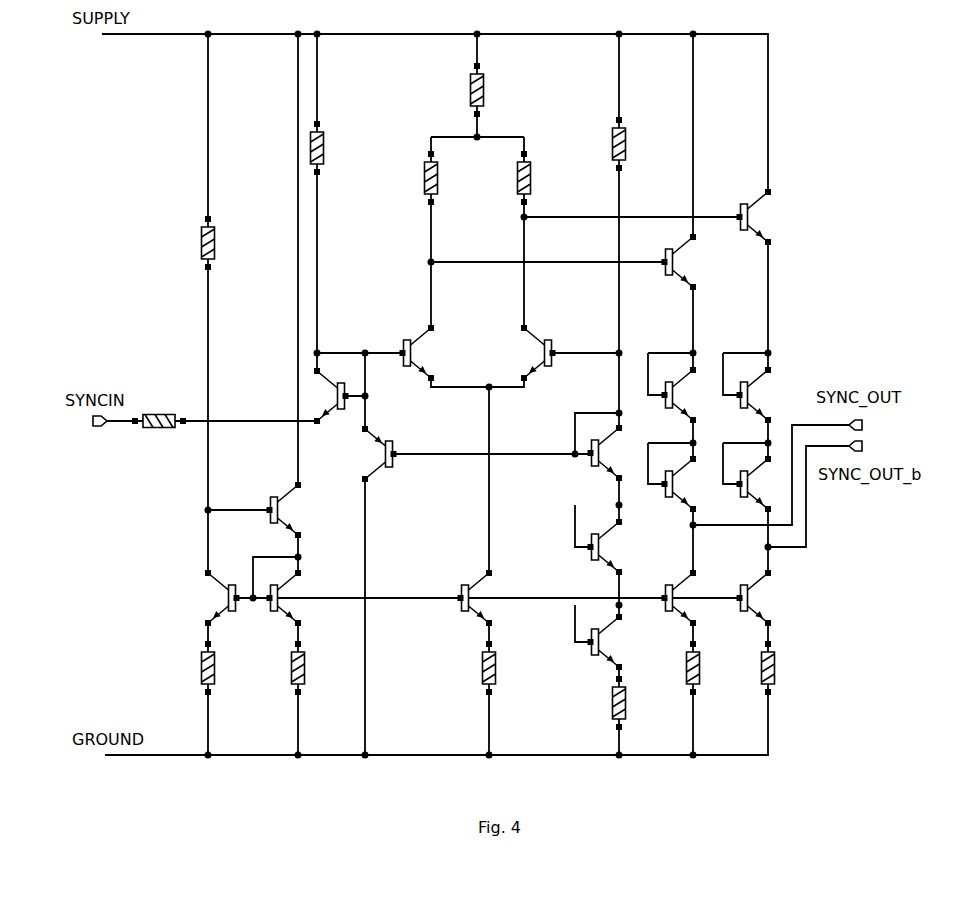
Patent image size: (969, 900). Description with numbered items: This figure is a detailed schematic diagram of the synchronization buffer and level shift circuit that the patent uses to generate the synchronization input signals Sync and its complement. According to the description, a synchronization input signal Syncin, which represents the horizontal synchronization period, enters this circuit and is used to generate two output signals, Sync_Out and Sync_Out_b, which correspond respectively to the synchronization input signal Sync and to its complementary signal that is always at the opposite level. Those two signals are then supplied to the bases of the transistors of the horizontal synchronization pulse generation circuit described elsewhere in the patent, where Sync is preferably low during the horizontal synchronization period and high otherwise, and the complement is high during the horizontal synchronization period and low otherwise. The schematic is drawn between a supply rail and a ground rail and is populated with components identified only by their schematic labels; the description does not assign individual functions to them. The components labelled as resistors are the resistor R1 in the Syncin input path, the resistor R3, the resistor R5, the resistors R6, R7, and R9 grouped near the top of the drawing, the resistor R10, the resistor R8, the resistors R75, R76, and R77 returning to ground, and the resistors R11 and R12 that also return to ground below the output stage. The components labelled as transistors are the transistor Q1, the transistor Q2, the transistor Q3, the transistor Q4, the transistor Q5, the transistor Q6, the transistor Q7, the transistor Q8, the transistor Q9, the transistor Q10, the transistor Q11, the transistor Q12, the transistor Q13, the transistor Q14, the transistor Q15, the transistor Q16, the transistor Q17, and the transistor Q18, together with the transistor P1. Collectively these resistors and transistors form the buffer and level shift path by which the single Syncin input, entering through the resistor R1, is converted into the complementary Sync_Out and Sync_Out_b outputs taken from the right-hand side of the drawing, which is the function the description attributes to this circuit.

The input resistor R1 is at (159, 434).
The resistor R3 is at (221, 243).
The resistor R5 is at (330, 148).
The resistor R6 is at (416, 178).
The resistor R7 is at (462, 90).
The resistor R8 is at (503, 668).
The resistor R9 is at (510, 178).
The resistor R10 is at (599, 144).
The resistor R11 is at (712, 668).
The resistor R12 is at (788, 668).
The resistor R75 is at (638, 703).
The resistor R76 is at (317, 668).
The resistor R77 is at (227, 668).
The transistor Q1 is at (213, 598).
The transistor Q2 is at (283, 594).
The transistor Q3 is at (281, 506).
The transistor Q4 is at (332, 396).
The transistor Q5 is at (429, 353).
The transistor Q6 is at (473, 594).
The transistor Q7 is at (529, 353).
The transistor Q8 is at (616, 642).
The transistor Q9 is at (603, 545).
The transistor Q10 is at (600, 452).
The transistor Q11 is at (674, 594).
The transistor Q12 is at (673, 482).
The transistor Q13 is at (673, 392).
The transistor Q14 is at (695, 262).
The transistor Q15 is at (749, 594).
The transistor Q16 is at (748, 482).
The transistor Q17 is at (748, 392).
The transistor Q18 is at (771, 217).
The PNP transistor P1 is at (379, 453).